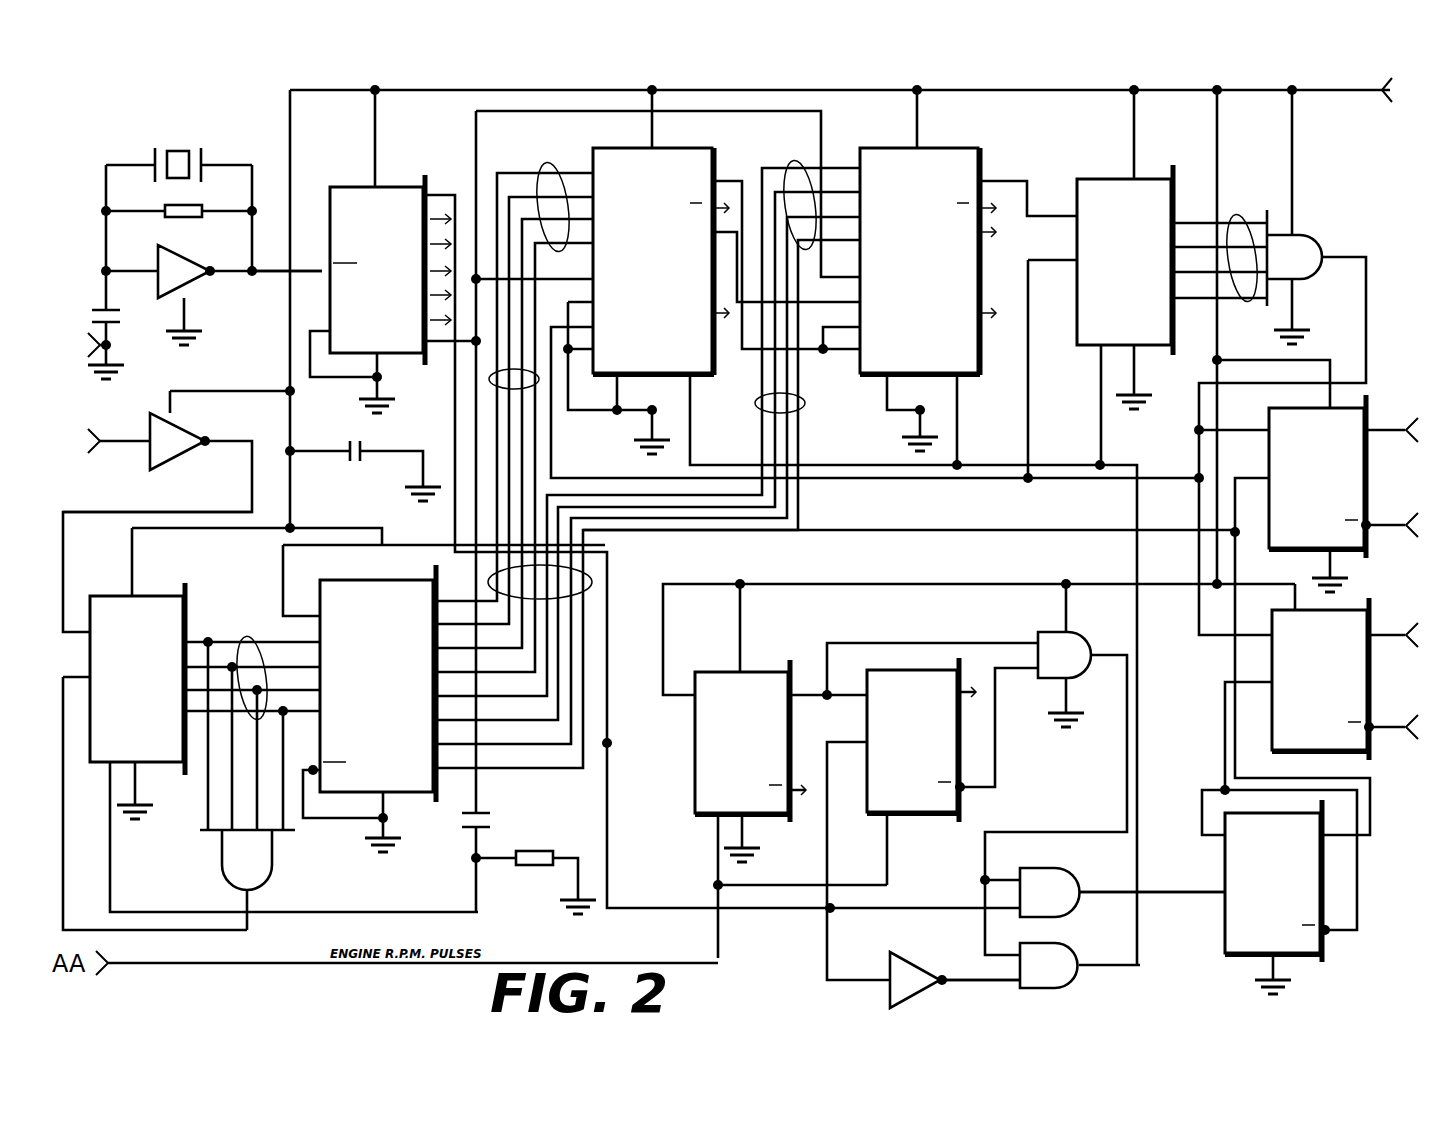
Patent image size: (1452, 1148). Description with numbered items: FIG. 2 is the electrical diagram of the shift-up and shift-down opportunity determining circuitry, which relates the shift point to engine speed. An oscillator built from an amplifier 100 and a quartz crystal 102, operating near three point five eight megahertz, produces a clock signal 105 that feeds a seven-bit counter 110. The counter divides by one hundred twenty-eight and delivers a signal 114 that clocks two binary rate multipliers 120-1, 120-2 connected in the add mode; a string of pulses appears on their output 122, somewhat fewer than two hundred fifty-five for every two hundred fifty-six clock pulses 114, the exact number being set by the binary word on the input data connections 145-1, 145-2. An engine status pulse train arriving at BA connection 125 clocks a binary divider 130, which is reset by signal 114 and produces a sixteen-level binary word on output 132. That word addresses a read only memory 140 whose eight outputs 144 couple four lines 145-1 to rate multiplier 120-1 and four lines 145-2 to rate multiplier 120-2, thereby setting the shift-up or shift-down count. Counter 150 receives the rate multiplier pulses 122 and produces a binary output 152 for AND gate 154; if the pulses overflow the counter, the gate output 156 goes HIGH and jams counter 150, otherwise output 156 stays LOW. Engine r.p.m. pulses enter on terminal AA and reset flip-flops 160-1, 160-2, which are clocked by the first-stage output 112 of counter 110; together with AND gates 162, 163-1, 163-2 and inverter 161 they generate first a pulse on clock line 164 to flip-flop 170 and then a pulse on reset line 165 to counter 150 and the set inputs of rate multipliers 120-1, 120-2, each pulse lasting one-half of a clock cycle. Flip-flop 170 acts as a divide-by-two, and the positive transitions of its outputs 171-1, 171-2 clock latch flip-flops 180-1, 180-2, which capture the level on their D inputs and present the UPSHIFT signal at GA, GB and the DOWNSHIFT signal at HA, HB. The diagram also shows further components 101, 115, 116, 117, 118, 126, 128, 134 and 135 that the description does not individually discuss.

The amplifier 100 is at (1318, 87).
The oscillator inverter 101 is at (198, 268).
The quartz crystal 102 is at (200, 157).
The clock signal 105 is at (282, 272).
The seven bit counter 110 is at (352, 195).
The Q1 output 112 is at (440, 192).
The clock signal (Q7 output) 114 is at (456, 360).
The reset line 115 is at (113, 840).
The inverted clock line 116 is at (1010, 982).
The capacitor 117 is at (503, 822).
The resistor 118 is at (550, 847).
The binary rate multiplier 120-1 is at (703, 164).
The binary rate multiplier 120-2 is at (966, 164).
The rate multiplier output 122 is at (1027, 192).
The BA connection 125 is at (112, 440).
The BA input capacitor 126 is at (82, 343).
The enable line 128 is at (157, 512).
The binary divider 130 is at (165, 598).
The binary word output 132 is at (243, 640).
The AND gate 134 is at (268, 870).
The clock line 135 is at (238, 930).
The read only memory 140 is at (325, 600).
The memory outputs 144 is at (590, 588).
The input data connections 145-1 is at (546, 180).
The input data connections 145-2 is at (800, 178).
The counter 150 is at (1152, 185).
The binary output 152 is at (1255, 211).
The AND gate 154 is at (1300, 242).
The gate output 156 is at (1370, 275).
The flip-flop 160-1 is at (758, 687).
The flip-flop 160-2 is at (948, 680).
The inverter 161 is at (918, 972).
The AND gate 162 is at (1088, 654).
The AND gate 163-1 is at (1070, 886).
The AND gate 163-2 is at (1070, 960).
The clock input line 164 is at (1220, 895).
The reset line 165 is at (694, 445).
The flip-flop 170 is at (1248, 838).
The flip-flop output signal 171-1 is at (875, 538).
The flip-flop output signal 171-2 is at (1225, 708).
The latch flip-flop 180-1 is at (1292, 425).
The latch flip-flop 180-2 is at (1342, 637).